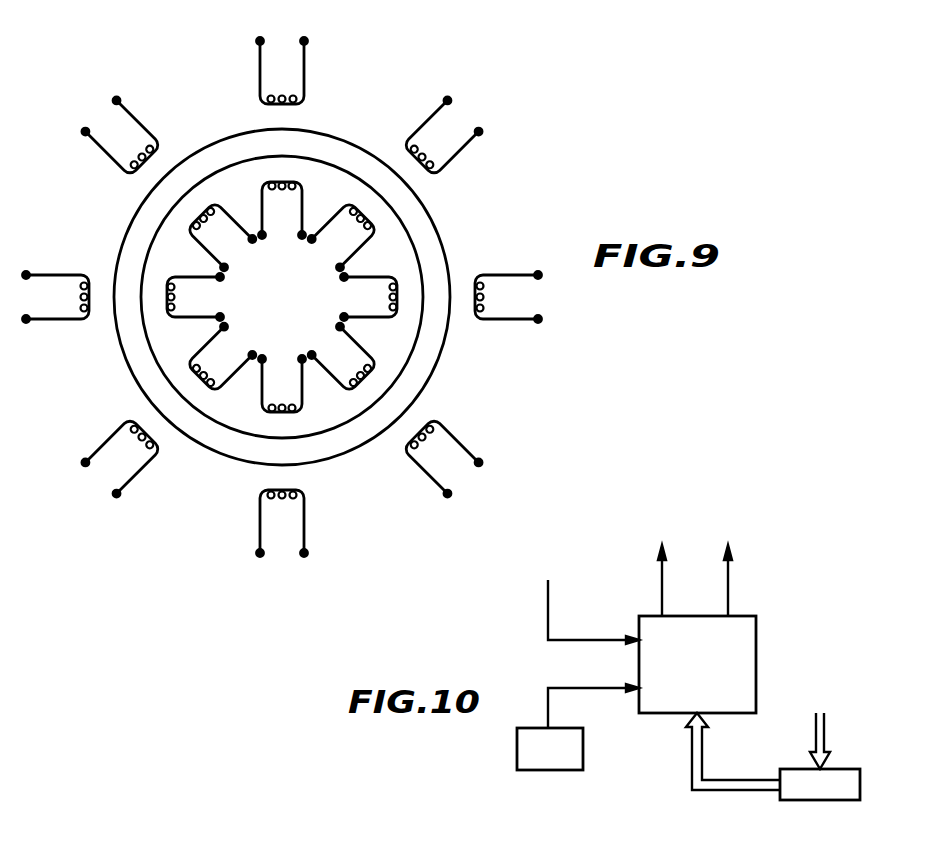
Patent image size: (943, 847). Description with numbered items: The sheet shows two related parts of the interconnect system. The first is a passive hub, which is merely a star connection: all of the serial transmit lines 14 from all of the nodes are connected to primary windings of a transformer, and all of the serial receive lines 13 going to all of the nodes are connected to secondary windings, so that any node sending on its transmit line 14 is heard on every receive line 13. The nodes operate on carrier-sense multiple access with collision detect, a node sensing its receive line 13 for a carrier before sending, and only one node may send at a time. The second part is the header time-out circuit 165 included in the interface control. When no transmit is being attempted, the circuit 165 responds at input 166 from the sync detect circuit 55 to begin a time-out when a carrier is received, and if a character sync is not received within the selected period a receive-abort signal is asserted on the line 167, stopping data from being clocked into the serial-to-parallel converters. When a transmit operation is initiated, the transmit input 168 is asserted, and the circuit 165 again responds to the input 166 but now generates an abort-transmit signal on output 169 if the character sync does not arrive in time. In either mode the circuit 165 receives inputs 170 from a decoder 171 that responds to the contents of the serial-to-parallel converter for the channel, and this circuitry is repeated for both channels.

In FIG. 9, the serial receive line 13 is at (138, 117).
In FIG. 9, the serial transmit line 14 is at (303, 210).
In FIG. 10, the sync detect circuit 55 is at (547, 772).
In FIG. 10, the header time-out circuit 165 is at (757, 660).
In FIG. 10, the input from sync detect circuit 166 is at (548, 703).
In FIG. 10, the receive-abort line 167 is at (662, 583).
In FIG. 10, the transmit input 168 is at (548, 619).
In FIG. 10, the abort-transmit output 169 is at (728, 583).
In FIG. 10, the decoder inputs 170 is at (692, 755).
In FIG. 10, the decoder 171 is at (820, 800).